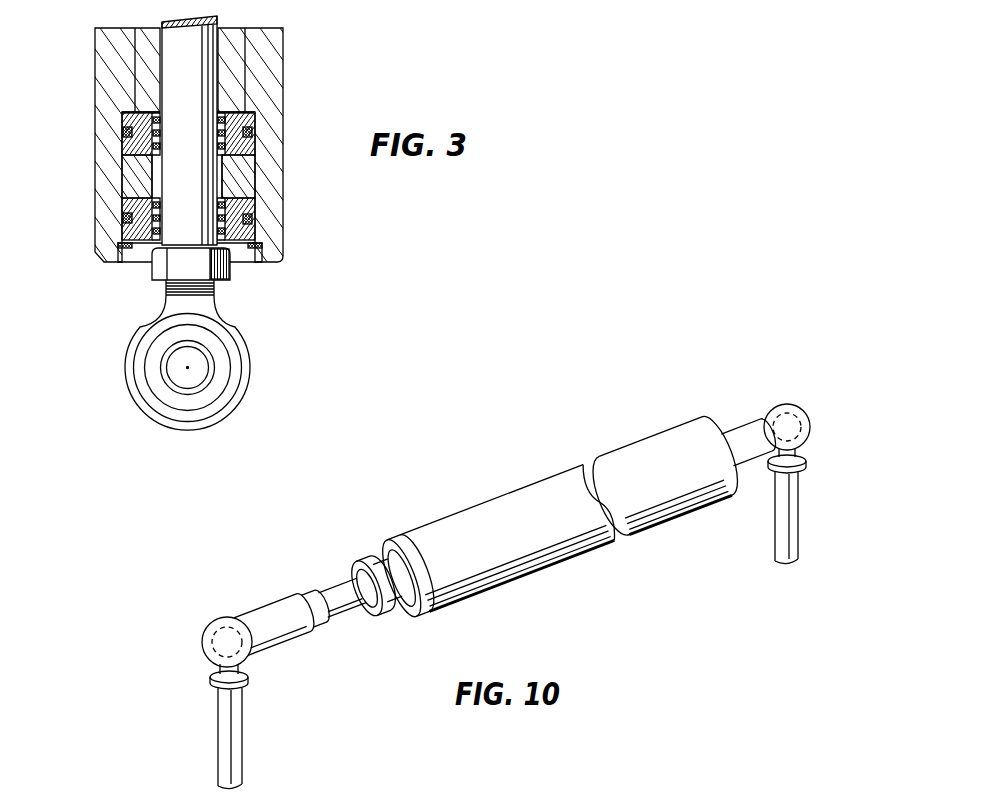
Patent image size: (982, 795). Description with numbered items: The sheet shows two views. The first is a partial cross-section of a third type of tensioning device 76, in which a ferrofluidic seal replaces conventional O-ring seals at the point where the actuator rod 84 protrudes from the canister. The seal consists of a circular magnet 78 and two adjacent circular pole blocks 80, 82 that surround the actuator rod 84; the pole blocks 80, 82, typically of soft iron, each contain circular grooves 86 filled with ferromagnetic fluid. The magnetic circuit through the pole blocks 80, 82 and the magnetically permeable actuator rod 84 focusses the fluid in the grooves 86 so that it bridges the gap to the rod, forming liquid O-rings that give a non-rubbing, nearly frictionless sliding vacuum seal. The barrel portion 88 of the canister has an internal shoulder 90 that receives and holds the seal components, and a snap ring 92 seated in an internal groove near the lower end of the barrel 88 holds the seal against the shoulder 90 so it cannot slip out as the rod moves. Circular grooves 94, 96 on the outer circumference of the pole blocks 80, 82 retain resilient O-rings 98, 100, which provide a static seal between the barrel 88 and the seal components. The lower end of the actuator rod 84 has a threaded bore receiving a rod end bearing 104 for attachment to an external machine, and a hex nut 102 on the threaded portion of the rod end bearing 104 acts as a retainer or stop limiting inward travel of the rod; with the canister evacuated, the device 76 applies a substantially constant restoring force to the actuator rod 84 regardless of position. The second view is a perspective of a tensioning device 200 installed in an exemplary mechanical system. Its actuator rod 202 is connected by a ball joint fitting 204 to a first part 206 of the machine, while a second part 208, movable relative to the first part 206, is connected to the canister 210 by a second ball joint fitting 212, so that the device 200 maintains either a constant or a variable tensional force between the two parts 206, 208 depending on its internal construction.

In FIG. 3, the tensioning device 76 is at (82, 74).
In FIG. 3, the circular magnet 78 is at (250, 180).
In FIG. 3, the pole block 80 is at (255, 152).
In FIG. 3, the pole block 82 is at (255, 209).
In FIG. 3, the actuator rod 84 is at (208, 73).
In FIG. 3, the circular grooves 86 is at (162, 147).
In FIG. 3, the barrel portion 88 is at (276, 53).
In FIG. 3, the internal shoulder 90 is at (250, 112).
In FIG. 3, the snap ring 92 is at (249, 262).
In FIG. 3, the circular groove 94 is at (122, 128).
In FIG. 3, the circular groove 96 is at (122, 212).
In FIG. 3, the O-ring 98 is at (252, 133).
In FIG. 3, the O-ring 100 is at (255, 222).
In FIG. 3, the hex nut 102 is at (157, 268).
In FIG. 3, the rod end bearing 104 is at (250, 372).
In FIG. 10, the tensioning device 200 is at (456, 500).
In FIG. 10, the actuator rod 202 is at (333, 592).
In FIG. 10, the ball joint fitting 204 is at (208, 633).
In FIG. 10, the first part 206 is at (248, 720).
In FIG. 10, the second part 208 is at (772, 548).
In FIG. 10, the canister 210 is at (514, 498).
In FIG. 10, the second ball joint fitting 212 is at (794, 408).